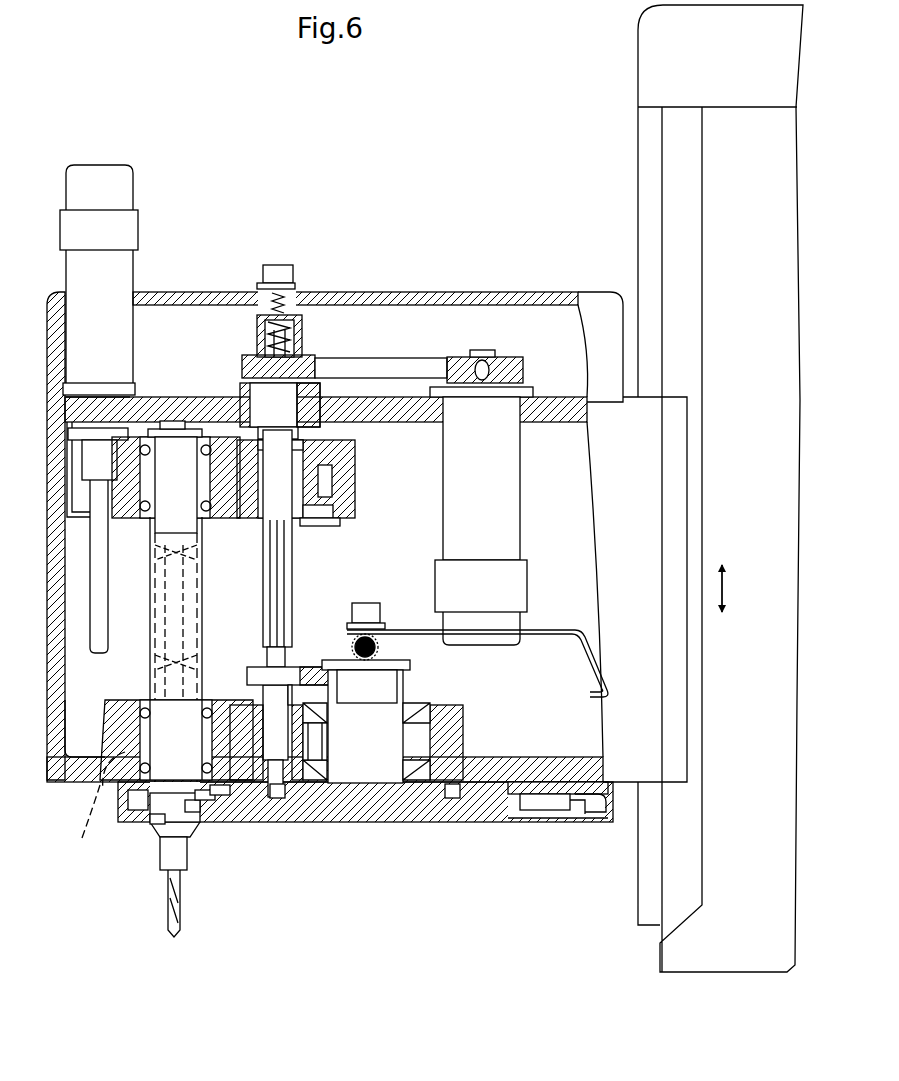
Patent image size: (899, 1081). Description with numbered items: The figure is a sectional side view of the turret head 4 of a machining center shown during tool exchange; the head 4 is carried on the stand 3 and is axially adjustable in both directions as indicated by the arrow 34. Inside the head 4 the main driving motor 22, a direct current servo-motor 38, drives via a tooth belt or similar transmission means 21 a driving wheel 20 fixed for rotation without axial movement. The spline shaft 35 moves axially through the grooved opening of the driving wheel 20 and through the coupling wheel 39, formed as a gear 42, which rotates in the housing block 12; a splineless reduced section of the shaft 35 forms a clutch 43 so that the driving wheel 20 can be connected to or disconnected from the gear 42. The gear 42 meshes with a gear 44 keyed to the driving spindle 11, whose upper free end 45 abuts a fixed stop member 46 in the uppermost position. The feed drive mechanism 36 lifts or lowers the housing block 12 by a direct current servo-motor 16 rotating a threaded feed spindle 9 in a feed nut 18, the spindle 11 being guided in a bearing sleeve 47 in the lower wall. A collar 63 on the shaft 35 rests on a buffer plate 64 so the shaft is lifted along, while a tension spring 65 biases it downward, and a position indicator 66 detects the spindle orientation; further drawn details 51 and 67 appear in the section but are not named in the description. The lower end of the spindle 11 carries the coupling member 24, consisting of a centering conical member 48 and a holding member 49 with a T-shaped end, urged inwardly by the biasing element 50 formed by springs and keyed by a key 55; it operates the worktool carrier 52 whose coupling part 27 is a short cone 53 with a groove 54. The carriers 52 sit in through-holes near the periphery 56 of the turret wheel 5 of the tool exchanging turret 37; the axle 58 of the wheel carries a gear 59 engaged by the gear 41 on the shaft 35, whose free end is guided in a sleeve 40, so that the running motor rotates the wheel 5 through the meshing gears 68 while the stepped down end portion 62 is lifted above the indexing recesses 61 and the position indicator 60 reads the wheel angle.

The stand 3 is at (653, 208).
The turret head 4 is at (510, 290).
The turret wheel 5 is at (335, 745).
The threaded feed spindle 9 is at (100, 602).
The driving spindle 11 is at (182, 628).
The housing block 12 is at (72, 513).
The direct current servo-motor 16 is at (120, 265).
The feed nut 18 is at (105, 460).
The driving wheel 20 is at (306, 356).
The transmission means 21 is at (460, 368).
The main driving motor 22 is at (502, 523).
The coupling member 24 is at (140, 810).
The coupling part 27 is at (178, 836).
The arrow 34 is at (744, 601).
The spline shaft 35 is at (276, 590).
The feed drive mechanism 36 is at (112, 398).
The tool exchanging turret 37 is at (428, 824).
The direct current servo-motor 38 is at (495, 450).
The coupling wheel 39 is at (318, 485).
The sleeve 40 is at (385, 742).
The gear 41 is at (252, 676).
The gear 42 is at (300, 440).
The clutch 43 is at (335, 520).
The gear 44 is at (135, 492).
The upper free end 45 is at (183, 422).
The fixed stop member 46 is at (205, 430).
The bearing sleeve 47 is at (110, 752).
The centering conical member 48 is at (220, 795).
The holding member 49 is at (120, 706).
The biasing element 50 is at (148, 666).
The spindle shaft 51 is at (185, 577).
The worktool carrier 52 is at (182, 852).
The short cone 53 is at (193, 812).
The groove 54 is at (157, 824).
The key 55 is at (79, 826).
The periphery 56 is at (610, 806).
The axle 58 is at (385, 735).
The gear 59 is at (440, 690).
The position indicator 60 is at (368, 603).
The indexing recesses 61 is at (278, 800).
The stepped down end portion 62 is at (312, 762).
The collar 63 is at (330, 407).
The buffer plate 64 is at (388, 410).
The tension spring 65 is at (264, 340).
The position indicator 66 is at (286, 268).
The retaining ring 67 is at (318, 528).
The meshing gears 68 is at (318, 650).